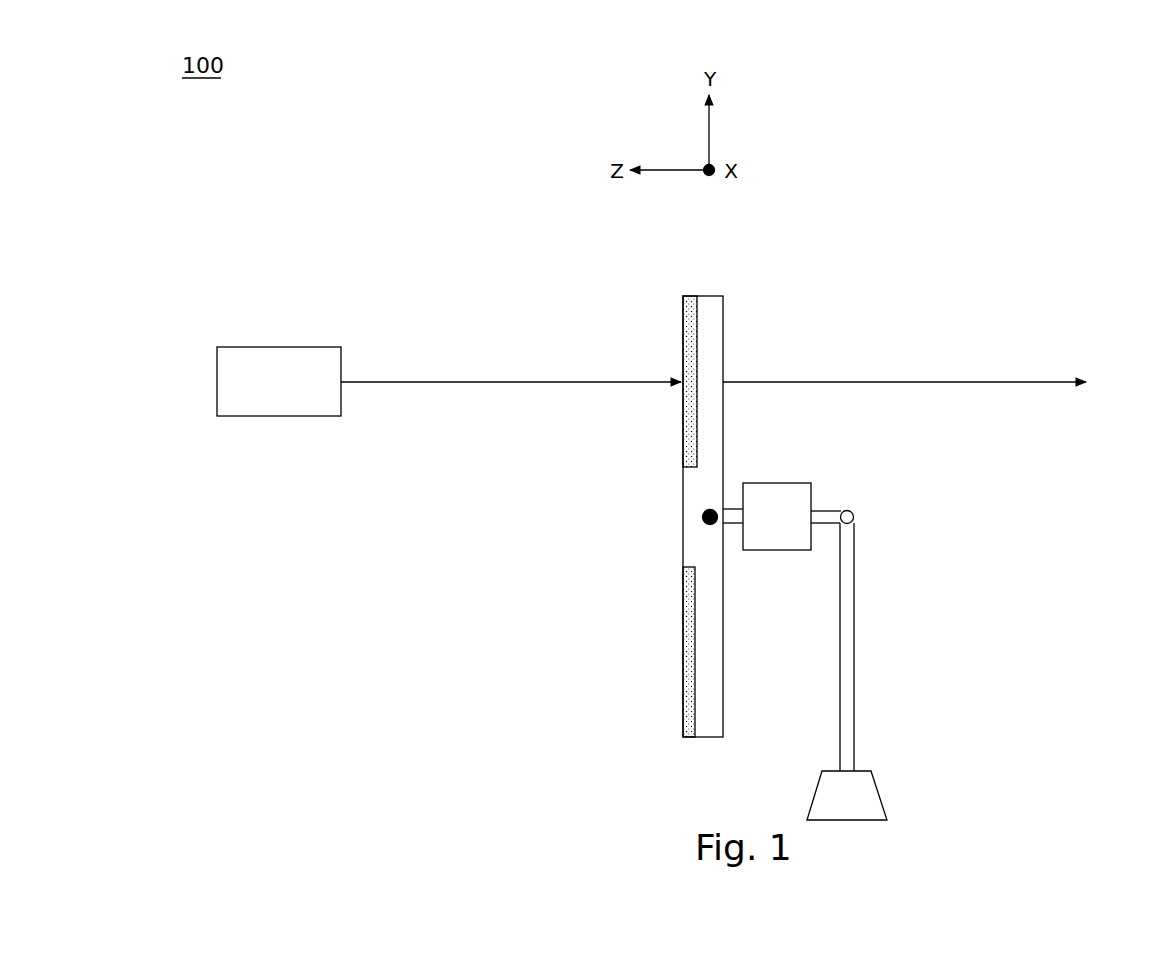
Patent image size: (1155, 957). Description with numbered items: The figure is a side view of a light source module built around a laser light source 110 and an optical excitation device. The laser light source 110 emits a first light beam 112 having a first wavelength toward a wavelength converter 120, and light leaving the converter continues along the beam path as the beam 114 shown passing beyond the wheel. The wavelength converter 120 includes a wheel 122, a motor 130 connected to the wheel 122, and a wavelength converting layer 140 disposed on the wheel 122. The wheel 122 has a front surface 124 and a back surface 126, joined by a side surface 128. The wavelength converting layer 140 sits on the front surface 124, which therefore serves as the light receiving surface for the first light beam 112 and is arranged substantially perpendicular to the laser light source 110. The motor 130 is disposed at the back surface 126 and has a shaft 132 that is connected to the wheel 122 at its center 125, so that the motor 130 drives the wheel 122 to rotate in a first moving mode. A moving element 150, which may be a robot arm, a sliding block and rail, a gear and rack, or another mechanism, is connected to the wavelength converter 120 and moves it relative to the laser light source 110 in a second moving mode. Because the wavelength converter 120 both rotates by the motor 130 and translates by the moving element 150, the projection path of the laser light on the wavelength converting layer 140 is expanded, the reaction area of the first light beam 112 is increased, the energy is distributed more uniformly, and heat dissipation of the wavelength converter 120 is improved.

The laser light source 110 is at (278, 347).
The first light beam 112 is at (478, 381).
The transmitted light beam 114 is at (815, 381).
The wavelength converter 120 is at (706, 496).
The wheel 122 is at (707, 738).
The front surface 124 is at (688, 433).
The center 125 is at (704, 518).
The back surface 126 is at (723, 453).
The side surface 128 is at (710, 325).
The motor 130 is at (800, 498).
The shaft 132 is at (732, 512).
The wavelength converting layer 140 is at (683, 333).
The moving element 150 is at (854, 643).